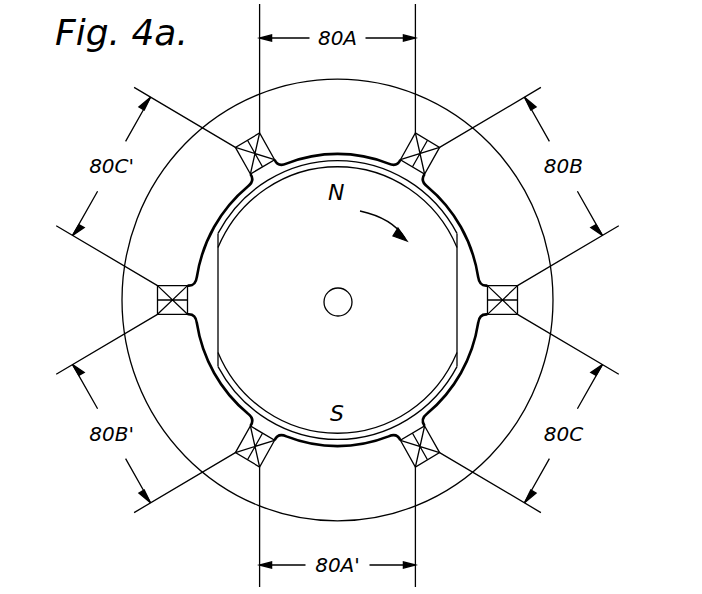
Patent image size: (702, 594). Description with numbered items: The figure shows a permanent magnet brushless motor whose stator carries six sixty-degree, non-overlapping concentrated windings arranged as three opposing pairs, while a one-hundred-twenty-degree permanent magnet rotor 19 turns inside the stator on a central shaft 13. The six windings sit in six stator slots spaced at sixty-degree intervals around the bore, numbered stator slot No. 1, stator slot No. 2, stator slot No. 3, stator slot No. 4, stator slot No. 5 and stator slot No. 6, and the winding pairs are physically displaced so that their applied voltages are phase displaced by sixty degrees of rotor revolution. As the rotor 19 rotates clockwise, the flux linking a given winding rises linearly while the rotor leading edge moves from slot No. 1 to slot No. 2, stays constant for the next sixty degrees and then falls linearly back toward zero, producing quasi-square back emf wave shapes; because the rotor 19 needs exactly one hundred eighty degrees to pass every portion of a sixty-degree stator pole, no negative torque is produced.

The stator slot No. 1 is at (419, 147).
The stator slot No. 2 is at (511, 300).
The coil 3 is at (420, 456).
The coil 4 is at (255, 456).
The coil 5 is at (162, 300).
The coil 6 is at (254, 147).
The shaft 13 is at (352, 298).
The rotor 19 is at (227, 308).